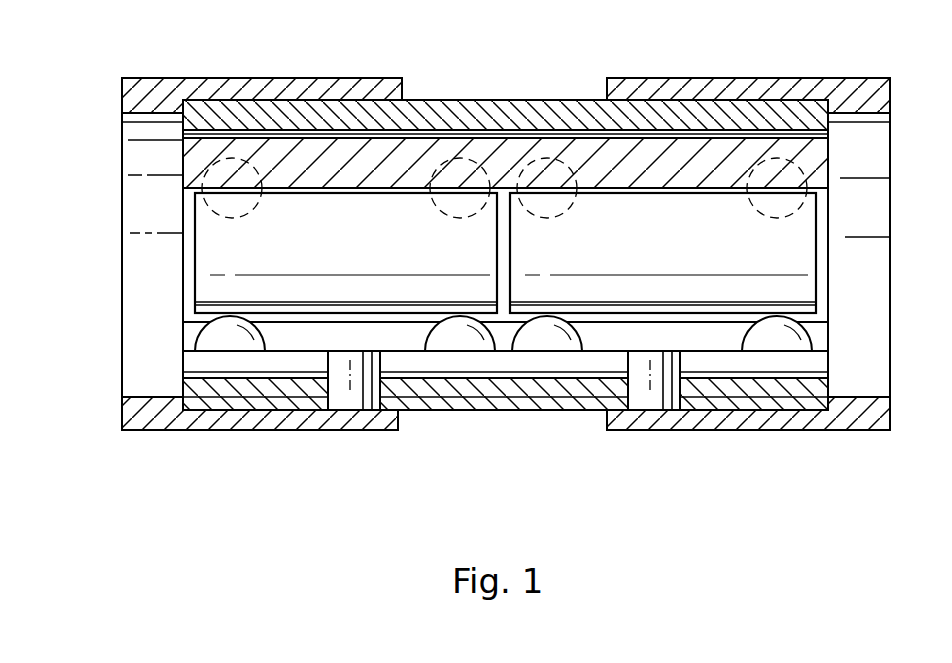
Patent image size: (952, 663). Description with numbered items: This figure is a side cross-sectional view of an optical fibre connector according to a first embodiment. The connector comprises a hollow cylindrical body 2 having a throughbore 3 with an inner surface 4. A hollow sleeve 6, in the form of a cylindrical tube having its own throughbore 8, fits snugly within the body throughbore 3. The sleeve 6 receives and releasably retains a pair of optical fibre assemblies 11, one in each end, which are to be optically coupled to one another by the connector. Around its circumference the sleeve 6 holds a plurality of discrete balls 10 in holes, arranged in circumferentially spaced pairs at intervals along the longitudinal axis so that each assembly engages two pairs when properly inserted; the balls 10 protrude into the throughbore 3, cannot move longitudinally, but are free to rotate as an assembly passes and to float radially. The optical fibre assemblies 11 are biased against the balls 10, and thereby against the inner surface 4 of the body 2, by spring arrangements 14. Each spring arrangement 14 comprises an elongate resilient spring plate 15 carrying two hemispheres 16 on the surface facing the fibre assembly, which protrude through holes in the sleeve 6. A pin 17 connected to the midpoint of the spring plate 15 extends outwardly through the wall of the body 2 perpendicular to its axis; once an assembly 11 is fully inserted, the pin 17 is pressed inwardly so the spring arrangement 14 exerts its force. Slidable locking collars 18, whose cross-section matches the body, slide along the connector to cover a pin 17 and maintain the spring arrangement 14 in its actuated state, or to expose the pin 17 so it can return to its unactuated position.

The hollow cylindrical body 2 is at (467, 119).
The throughbore 3 is at (165, 352).
The inner surface 4 is at (194, 134).
The sleeve 6 is at (292, 110).
The throughbore 8 is at (116, 254).
The balls 10 is at (214, 140).
The optical fibre assemblies 11 is at (203, 293).
The spring arrangements 14 is at (418, 361).
The spring plate 15 is at (292, 353).
The hemispheres 16 is at (233, 347).
The pin 17 is at (340, 396).
The locking collars 18 is at (147, 92).